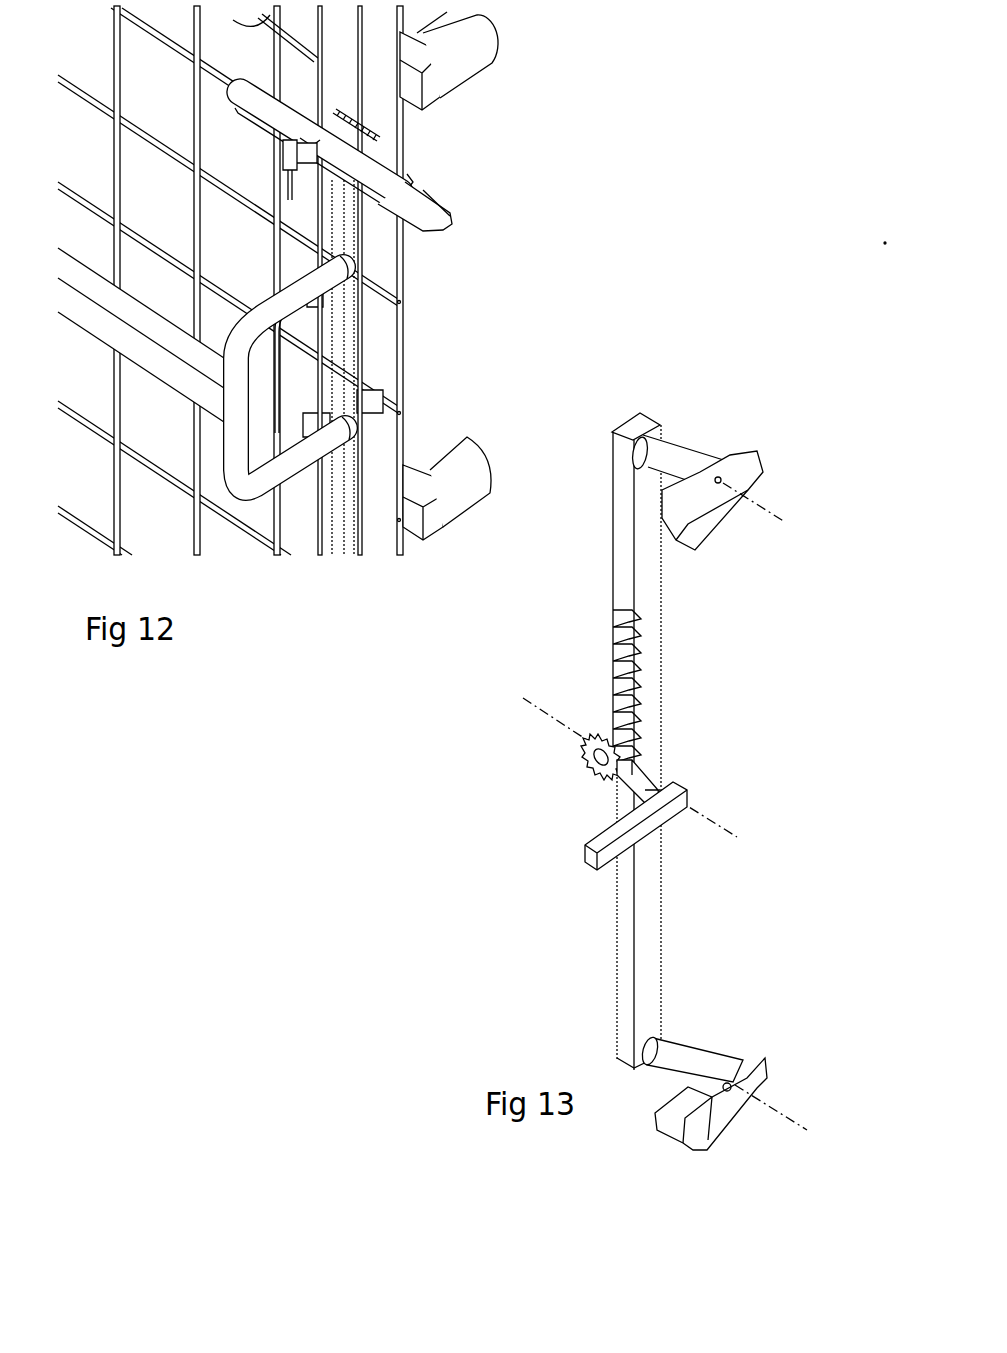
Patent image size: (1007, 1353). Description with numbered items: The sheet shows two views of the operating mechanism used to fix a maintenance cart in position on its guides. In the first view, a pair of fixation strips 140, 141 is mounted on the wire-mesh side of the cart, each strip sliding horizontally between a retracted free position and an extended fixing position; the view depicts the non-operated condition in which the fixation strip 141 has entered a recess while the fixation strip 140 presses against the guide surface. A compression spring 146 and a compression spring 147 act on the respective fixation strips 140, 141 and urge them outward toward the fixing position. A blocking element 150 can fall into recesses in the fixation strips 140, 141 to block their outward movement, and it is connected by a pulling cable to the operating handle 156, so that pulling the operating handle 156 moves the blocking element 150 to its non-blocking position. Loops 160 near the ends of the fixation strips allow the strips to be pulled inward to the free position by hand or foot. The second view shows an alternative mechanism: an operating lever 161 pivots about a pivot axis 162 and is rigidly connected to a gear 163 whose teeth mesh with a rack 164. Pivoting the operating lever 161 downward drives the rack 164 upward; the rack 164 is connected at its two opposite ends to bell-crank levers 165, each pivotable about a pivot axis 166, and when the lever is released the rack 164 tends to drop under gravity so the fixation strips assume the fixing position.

In FIG. 12, the fixation strip 140 is at (378, 203).
In FIG. 12, the fixation strip 141 is at (427, 203).
In FIG. 12, the compression spring 146 is at (372, 130).
In FIG. 12, the compression spring 147 is at (410, 181).
In FIG. 12, the blocking element 150 is at (300, 168).
In FIG. 12, the operating handle 156 is at (250, 373).
In FIG. 13, the loop 160 is at (730, 512).
In FIG. 13, the operating lever 161 is at (603, 867).
In FIG. 13, the pivot axis 162 is at (707, 820).
In FIG. 13, the gear 163 is at (587, 760).
In FIG. 13, the rack 164 is at (653, 893).
In FIG. 13, the bell-crank lever 165 is at (683, 460).
In FIG. 13, the pivot axis 166 is at (772, 515).